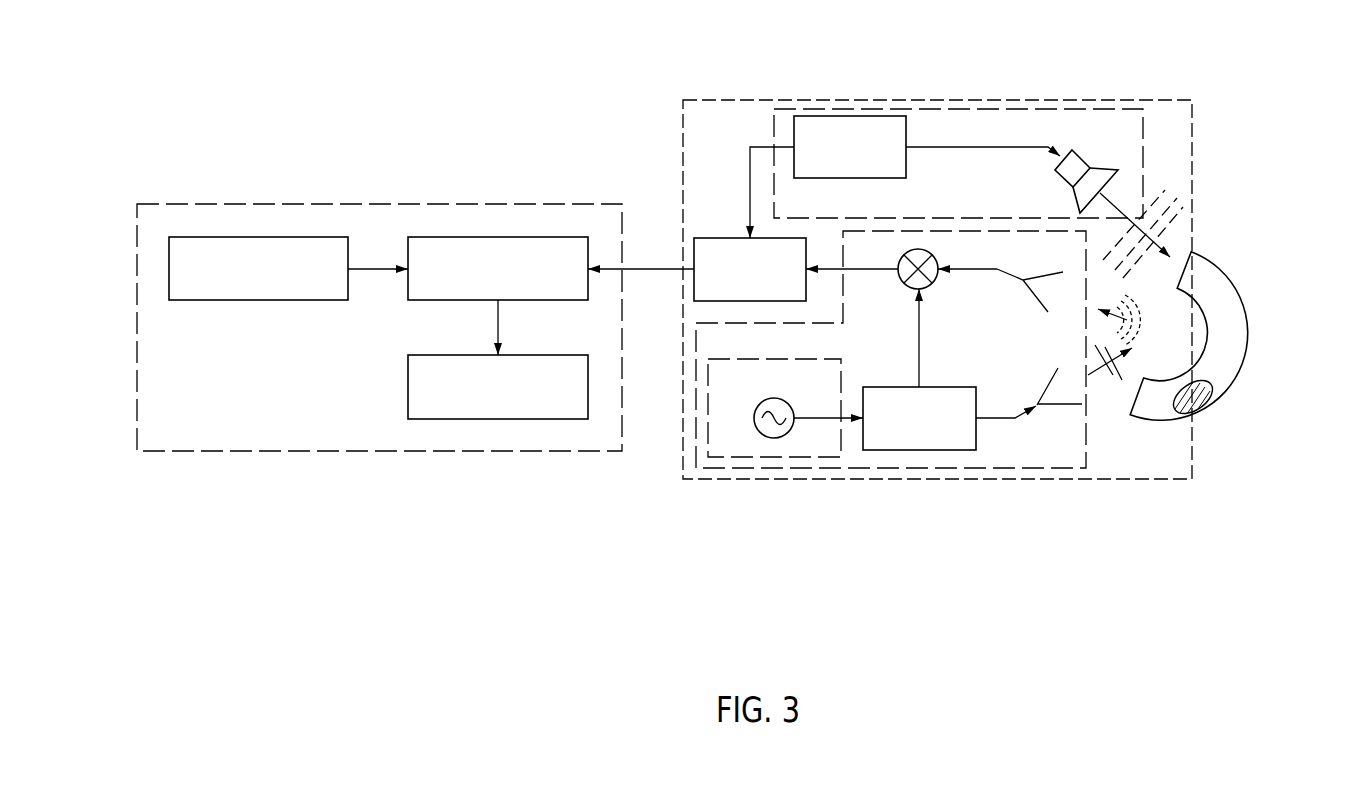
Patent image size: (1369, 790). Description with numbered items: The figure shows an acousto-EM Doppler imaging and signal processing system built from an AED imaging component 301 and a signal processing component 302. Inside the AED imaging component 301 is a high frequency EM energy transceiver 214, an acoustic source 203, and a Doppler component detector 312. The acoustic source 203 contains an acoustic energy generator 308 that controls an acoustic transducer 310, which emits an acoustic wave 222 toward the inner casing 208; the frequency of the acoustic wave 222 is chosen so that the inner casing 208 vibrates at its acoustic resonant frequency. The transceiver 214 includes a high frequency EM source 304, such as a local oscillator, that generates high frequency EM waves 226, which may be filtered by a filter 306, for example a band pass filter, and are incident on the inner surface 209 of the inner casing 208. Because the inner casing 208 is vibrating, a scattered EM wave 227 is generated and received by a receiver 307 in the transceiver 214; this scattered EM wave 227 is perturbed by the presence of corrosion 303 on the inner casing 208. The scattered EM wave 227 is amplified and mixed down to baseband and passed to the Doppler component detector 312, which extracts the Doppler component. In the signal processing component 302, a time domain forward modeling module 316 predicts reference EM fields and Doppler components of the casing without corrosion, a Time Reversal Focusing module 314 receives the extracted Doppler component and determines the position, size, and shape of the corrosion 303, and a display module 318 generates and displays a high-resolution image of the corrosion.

The signal processing component 302 is at (159, 203).
The time domain forward modeling module 316 is at (240, 282).
The Time Reversal Focusing (TRF) module 314 is at (480, 282).
The display module 318 is at (480, 402).
The AED imaging component 301 is at (711, 99).
The acoustic source 203 is at (1131, 108).
The acoustic energy generator 308 is at (832, 160).
The acoustic transducer 310 is at (1060, 176).
The acoustic wave 222 is at (1173, 203).
The Doppler component detector 312 is at (732, 283).
The high frequency EM energy transceiver 214 is at (1075, 480).
The high frequency EM source 304 is at (720, 388).
The filter 306 is at (902, 431).
The receiver 307 is at (1048, 313).
The scattered EM wave 227 is at (1120, 331).
The inner surface 209 is at (1178, 292).
The high frequency EM waves 226 is at (1110, 383).
The inner casing 208 is at (1245, 307).
The corrosion 303 is at (1200, 410).